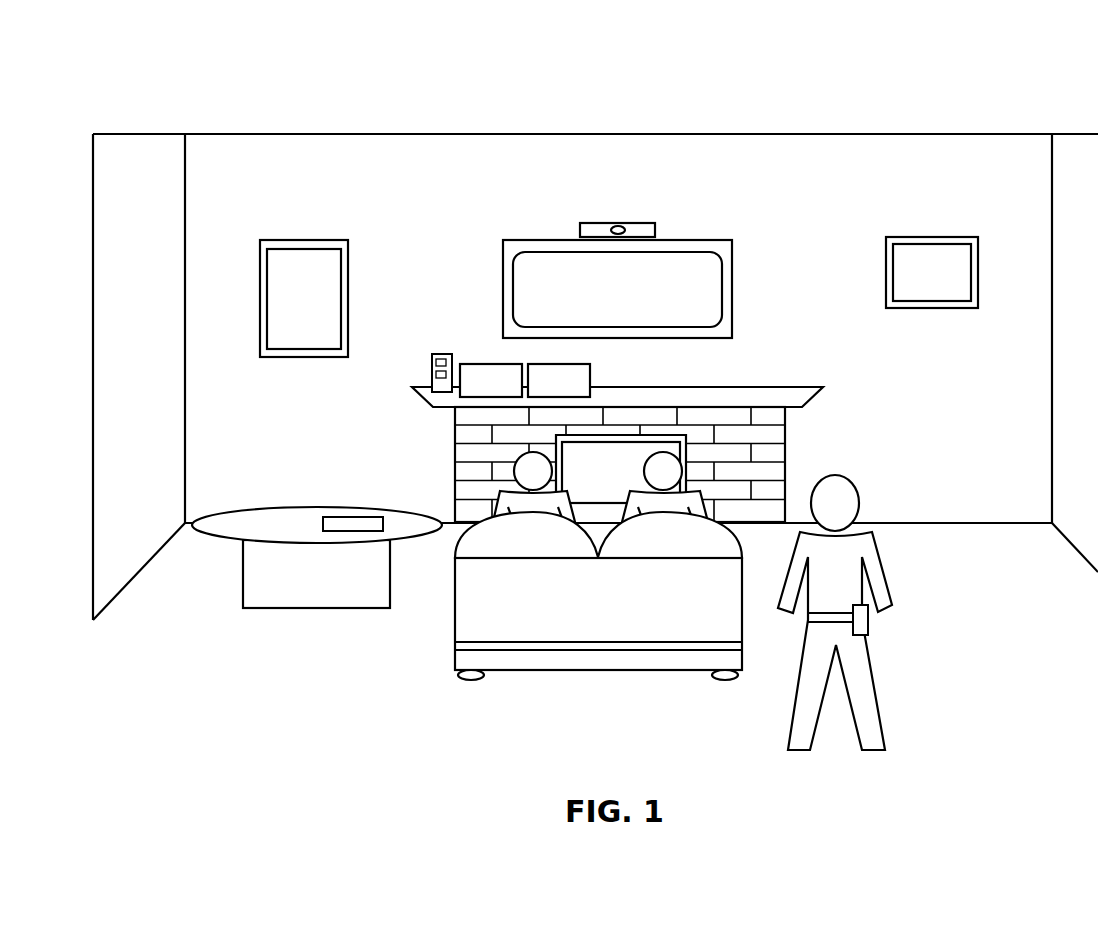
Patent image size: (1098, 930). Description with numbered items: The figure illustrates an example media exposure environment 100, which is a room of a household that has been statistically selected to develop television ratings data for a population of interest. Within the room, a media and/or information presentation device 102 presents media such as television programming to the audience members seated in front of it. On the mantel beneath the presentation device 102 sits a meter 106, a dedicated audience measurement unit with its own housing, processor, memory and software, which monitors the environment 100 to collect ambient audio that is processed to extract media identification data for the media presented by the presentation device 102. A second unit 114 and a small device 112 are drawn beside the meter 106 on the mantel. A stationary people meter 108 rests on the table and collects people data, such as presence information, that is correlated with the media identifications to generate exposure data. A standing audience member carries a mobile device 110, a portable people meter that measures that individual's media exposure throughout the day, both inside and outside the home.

The media exposure environment 100 is at (218, 120).
The media and/or information presentation device 102 is at (599, 299).
The meter 106 is at (473, 391).
The people meter 108 is at (343, 516).
The mobile device 110 is at (868, 628).
The wireless device 112 is at (440, 353).
The computing device 114 is at (541, 391).